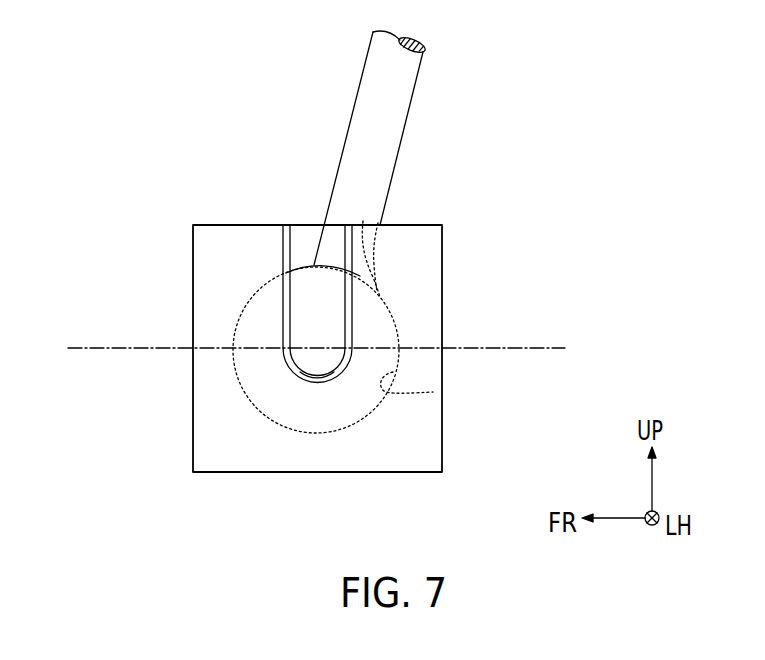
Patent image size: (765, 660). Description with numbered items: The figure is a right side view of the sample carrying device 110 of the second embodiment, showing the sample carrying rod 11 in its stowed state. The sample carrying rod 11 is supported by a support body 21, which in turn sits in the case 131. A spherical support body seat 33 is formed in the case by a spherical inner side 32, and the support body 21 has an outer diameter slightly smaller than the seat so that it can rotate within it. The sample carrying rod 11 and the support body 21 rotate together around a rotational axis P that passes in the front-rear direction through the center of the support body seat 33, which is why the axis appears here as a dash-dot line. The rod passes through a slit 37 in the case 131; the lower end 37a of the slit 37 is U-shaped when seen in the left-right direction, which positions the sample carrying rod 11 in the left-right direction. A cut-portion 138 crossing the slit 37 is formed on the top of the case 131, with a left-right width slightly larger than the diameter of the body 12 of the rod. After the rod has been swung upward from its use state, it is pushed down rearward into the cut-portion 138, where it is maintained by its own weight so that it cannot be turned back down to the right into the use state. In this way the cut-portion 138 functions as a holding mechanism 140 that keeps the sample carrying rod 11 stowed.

The sample carrying rod 11 is at (427, 148).
The body 12 is at (408, 80).
The support body 21 is at (302, 297).
The support body seat 33 is at (474, 390).
The spherical inner side 32 is at (433, 392).
The slit 37 is at (291, 247).
The lower end 37a is at (318, 374).
The sample carrying device 110 is at (526, 200).
The case 131 is at (420, 293).
The cut-portion 138 is at (436, 222).
The holding mechanism 140 is at (363, 221).
The rotational axis P is at (93, 347).